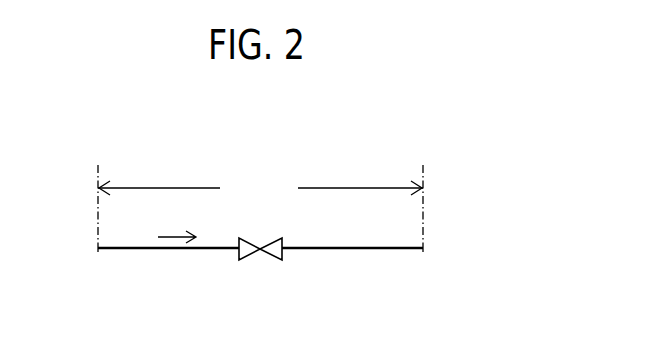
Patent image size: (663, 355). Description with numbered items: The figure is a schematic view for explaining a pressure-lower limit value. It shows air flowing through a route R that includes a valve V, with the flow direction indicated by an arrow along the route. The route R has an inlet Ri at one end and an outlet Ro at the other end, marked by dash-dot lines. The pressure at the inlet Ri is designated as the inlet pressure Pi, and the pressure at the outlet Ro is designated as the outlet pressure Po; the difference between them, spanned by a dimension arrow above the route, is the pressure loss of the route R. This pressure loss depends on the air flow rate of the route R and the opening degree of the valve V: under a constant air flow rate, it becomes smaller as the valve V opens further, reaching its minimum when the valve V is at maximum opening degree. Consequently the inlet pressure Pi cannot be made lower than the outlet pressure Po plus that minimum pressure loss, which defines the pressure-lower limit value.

The route R is at (342, 250).
The valve V is at (282, 258).
The inlet pressure Pi is at (94, 191).
The outlet pressure Po is at (423, 191).
The inlet Ri is at (98, 252).
The outlet Ro is at (423, 252).